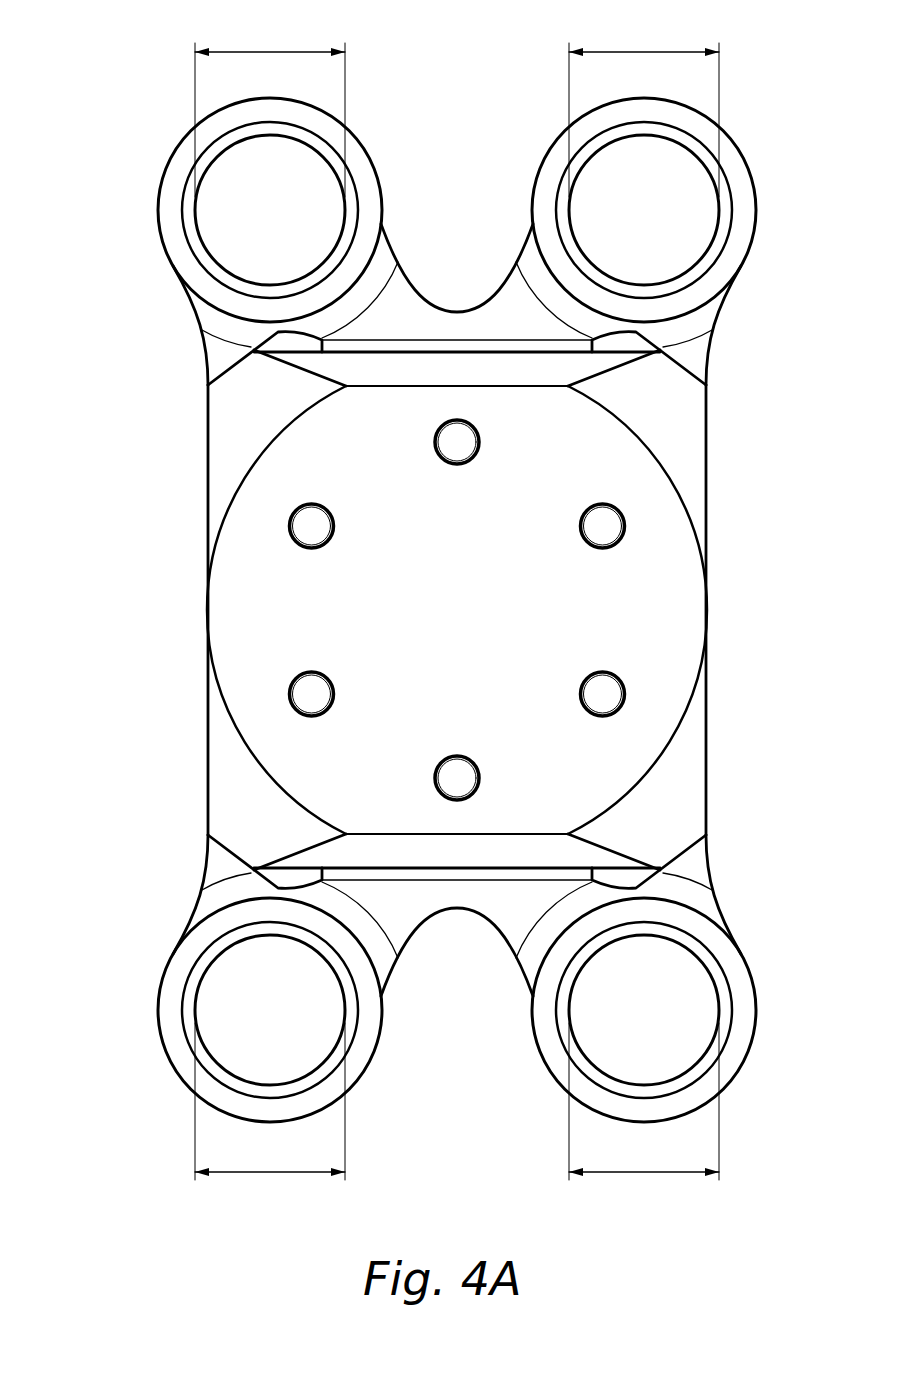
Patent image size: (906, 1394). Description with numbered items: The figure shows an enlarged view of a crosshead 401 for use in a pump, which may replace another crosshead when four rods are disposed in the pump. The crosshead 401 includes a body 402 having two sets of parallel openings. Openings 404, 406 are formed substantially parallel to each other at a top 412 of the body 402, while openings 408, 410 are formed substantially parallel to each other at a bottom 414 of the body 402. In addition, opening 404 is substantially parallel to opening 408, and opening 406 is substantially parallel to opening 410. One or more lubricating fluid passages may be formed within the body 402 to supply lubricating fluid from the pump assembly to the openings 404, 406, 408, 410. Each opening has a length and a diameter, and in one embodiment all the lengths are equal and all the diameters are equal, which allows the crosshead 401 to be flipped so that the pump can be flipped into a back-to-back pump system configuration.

The crosshead 401 is at (132, 55).
The body 402 is at (208, 610).
The opening 404 is at (290, 222).
The opening 406 is at (664, 222).
The opening 408 is at (290, 1022).
The opening 410 is at (664, 1022).
The top 412 is at (458, 122).
The bottom 414 is at (458, 1100).